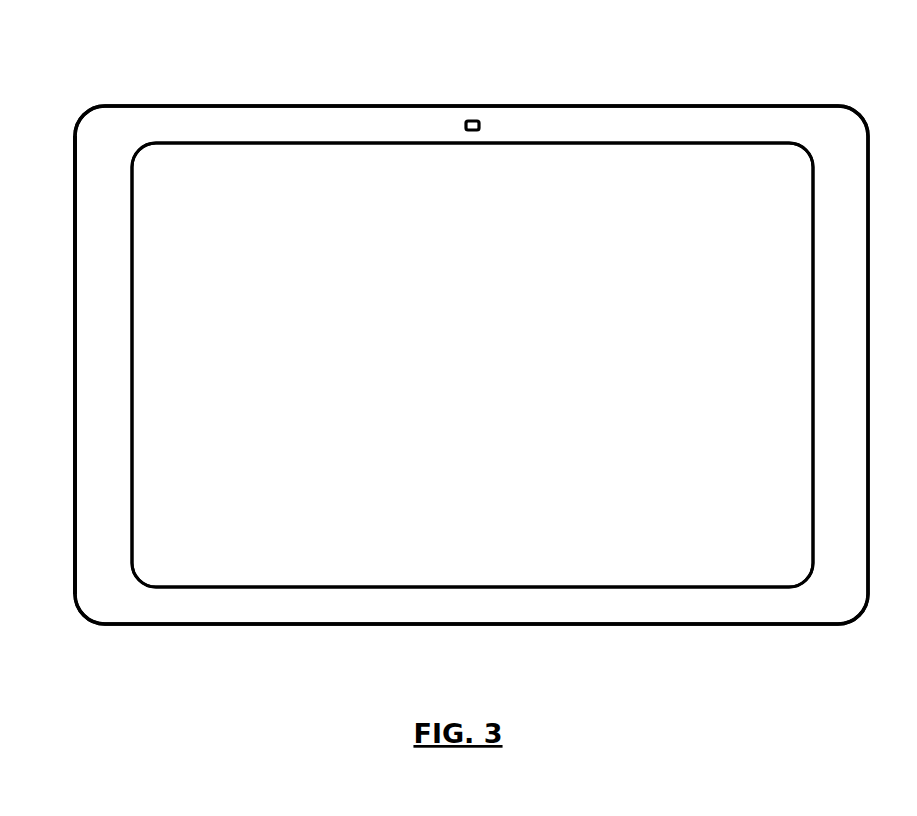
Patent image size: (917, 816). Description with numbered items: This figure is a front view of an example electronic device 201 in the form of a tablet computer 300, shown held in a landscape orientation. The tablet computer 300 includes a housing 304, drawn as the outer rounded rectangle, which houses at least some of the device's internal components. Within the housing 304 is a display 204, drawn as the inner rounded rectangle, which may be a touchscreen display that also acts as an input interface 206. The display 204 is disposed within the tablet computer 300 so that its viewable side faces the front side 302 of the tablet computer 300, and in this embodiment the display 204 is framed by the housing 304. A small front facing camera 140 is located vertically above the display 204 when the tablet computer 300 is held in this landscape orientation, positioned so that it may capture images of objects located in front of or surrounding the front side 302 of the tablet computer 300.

The electronic device 201 is at (141, 78).
The tablet computer 300 is at (239, 78).
The display 204 is at (691, 142).
The input interface 206 is at (337, 141).
The front facing camera 140 is at (465, 119).
The housing 304 is at (74, 221).
The front side 302 is at (84, 518).